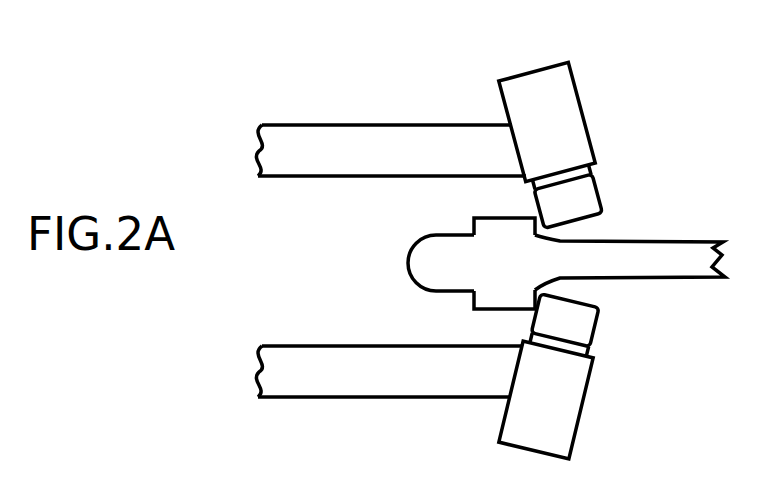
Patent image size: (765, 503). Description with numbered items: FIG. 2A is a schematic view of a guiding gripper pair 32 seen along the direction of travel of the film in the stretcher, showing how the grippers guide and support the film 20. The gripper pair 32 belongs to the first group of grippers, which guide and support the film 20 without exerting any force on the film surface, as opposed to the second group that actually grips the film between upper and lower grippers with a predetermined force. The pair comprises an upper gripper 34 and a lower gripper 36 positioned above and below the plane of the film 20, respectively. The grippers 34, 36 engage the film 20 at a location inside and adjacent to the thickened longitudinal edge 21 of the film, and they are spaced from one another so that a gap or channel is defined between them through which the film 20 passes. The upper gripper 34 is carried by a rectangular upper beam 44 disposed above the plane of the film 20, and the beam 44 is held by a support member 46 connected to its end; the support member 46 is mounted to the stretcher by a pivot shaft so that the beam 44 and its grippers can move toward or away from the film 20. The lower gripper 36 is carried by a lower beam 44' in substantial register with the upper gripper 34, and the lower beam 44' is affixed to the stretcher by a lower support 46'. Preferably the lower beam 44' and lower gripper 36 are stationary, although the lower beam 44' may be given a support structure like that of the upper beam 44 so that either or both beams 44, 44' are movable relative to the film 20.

The film 20 is at (653, 241).
The thickened longitudinal edge 21 is at (476, 216).
The guiding gripper pair 32 is at (348, 85).
The upper gripper 34 is at (601, 190).
The lower gripper 36 is at (596, 330).
The upper beam 44 is at (548, 126).
The lower beam 44' is at (547, 395).
The support member 46 is at (391, 150).
The lower support 46' is at (389, 371).